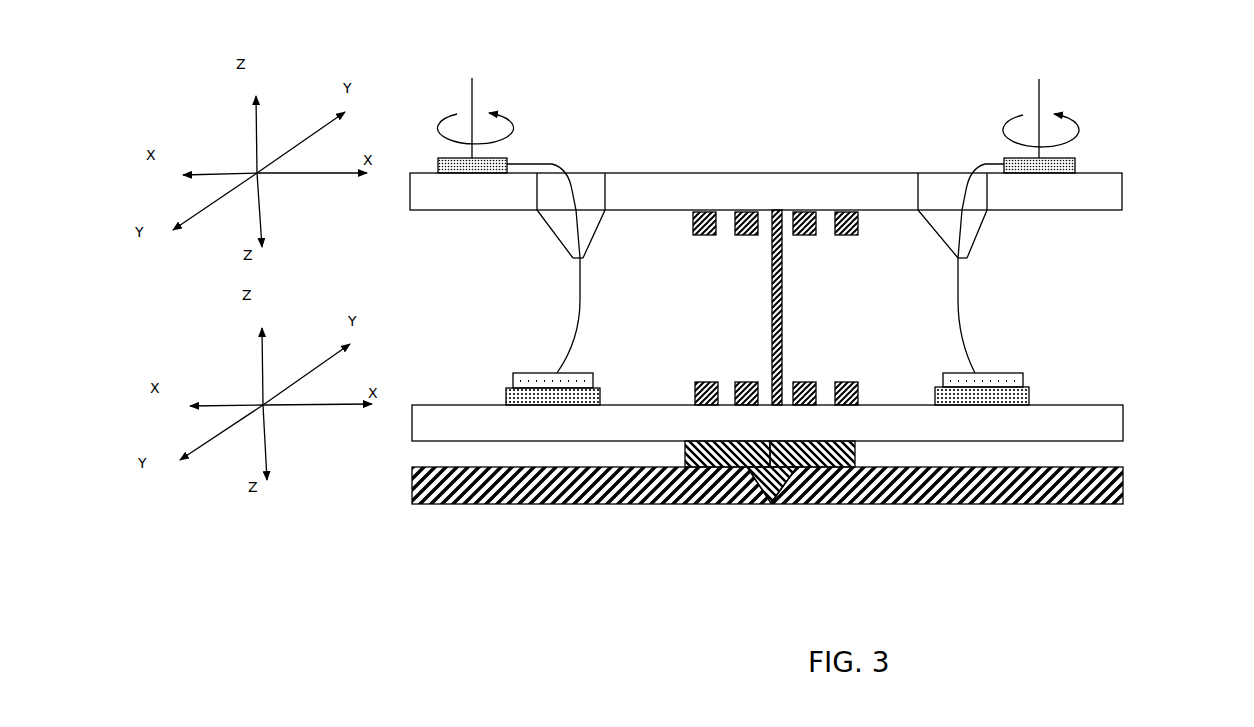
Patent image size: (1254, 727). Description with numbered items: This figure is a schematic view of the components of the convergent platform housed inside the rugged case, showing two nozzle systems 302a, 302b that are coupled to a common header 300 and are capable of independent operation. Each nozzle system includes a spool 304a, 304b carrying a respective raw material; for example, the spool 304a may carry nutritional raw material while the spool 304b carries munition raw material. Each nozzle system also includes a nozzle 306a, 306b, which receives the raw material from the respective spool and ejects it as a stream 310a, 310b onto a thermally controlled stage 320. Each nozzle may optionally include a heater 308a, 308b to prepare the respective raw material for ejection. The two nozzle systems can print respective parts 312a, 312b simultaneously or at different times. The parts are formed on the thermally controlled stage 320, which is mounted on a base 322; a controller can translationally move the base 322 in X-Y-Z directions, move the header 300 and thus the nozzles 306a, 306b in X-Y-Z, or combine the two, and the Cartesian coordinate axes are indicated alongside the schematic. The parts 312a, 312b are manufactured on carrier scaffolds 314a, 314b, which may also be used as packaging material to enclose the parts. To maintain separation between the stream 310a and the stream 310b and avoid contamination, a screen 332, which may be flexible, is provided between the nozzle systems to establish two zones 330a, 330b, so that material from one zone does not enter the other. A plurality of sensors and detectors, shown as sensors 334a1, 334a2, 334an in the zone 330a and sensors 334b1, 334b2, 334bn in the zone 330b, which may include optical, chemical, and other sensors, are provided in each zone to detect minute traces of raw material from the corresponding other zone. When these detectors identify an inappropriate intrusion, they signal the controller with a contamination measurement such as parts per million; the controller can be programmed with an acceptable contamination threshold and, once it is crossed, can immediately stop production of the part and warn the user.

The header 300 is at (725, 173).
The nozzle system 302a is at (491, 66).
The nozzle system 302b is at (1022, 86).
The spool 304a is at (507, 160).
The spool 304b is at (1003, 160).
The nozzle 306a is at (545, 222).
The nozzle 306b is at (987, 214).
The heater 308a is at (570, 260).
The heater 308b is at (965, 257).
The stream 310a is at (580, 302).
The stream 310b is at (958, 293).
The part 312a is at (507, 372).
The part 312b is at (1031, 378).
The carrier scaffold 314a is at (603, 392).
The carrier scaffold 314b is at (1032, 395).
The thermally controlled stage 320 is at (1124, 425).
The base 322 is at (1129, 459).
The zone 330a is at (727, 381).
The zone 330b is at (812, 381).
The screen 332 is at (775, 292).
The sensor 334a1 is at (694, 222).
The sensor 334a2 is at (735, 226).
The sensor 334an is at (705, 382).
The sensor 334b1 is at (798, 235).
The sensor 334b2 is at (858, 226).
The sensor 334bn is at (796, 384).